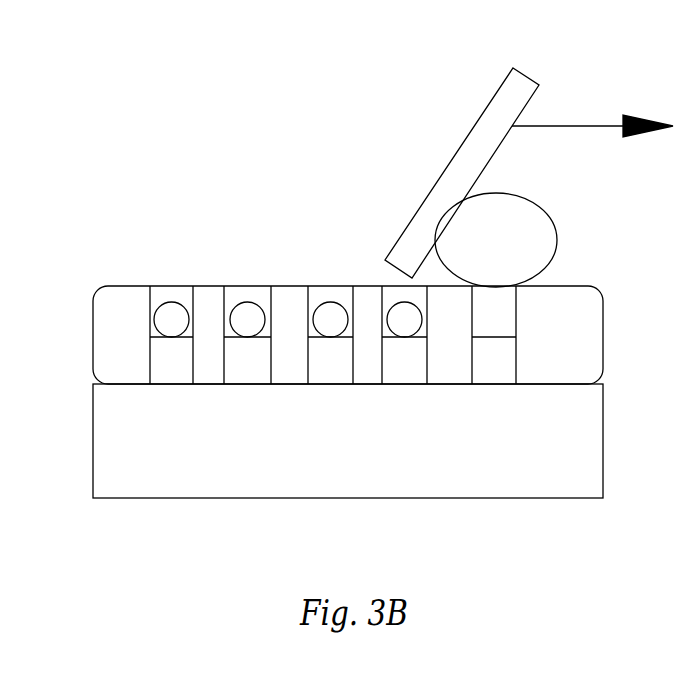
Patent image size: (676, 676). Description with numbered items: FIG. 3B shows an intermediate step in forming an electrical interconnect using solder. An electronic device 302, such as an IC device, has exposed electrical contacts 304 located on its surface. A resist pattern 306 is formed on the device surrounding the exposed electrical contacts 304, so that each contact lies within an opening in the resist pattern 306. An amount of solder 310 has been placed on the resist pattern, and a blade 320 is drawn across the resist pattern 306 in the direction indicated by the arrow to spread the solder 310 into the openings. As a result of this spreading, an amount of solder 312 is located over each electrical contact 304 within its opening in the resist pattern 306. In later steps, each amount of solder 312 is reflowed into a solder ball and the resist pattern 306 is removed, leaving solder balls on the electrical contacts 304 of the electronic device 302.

The electronic device 302 is at (350, 499).
The electrical contacts 304 is at (172, 365).
The resist pattern 306 is at (95, 320).
The solder 310 is at (557, 234).
The amount of solder 312 is at (172, 302).
The blade 320 is at (448, 163).